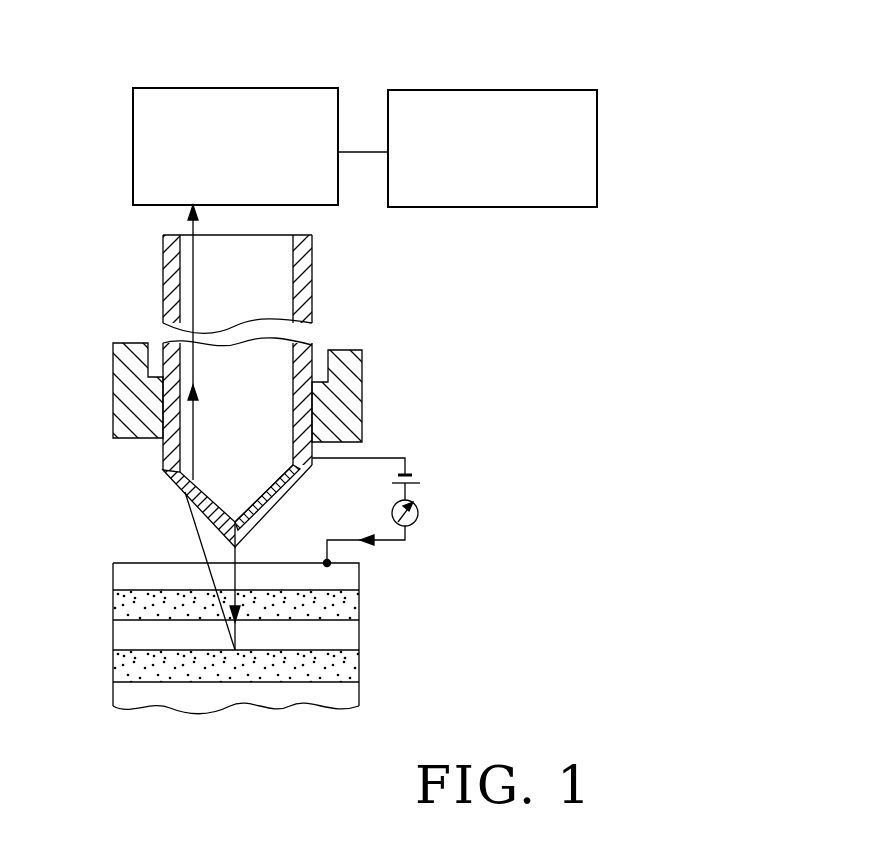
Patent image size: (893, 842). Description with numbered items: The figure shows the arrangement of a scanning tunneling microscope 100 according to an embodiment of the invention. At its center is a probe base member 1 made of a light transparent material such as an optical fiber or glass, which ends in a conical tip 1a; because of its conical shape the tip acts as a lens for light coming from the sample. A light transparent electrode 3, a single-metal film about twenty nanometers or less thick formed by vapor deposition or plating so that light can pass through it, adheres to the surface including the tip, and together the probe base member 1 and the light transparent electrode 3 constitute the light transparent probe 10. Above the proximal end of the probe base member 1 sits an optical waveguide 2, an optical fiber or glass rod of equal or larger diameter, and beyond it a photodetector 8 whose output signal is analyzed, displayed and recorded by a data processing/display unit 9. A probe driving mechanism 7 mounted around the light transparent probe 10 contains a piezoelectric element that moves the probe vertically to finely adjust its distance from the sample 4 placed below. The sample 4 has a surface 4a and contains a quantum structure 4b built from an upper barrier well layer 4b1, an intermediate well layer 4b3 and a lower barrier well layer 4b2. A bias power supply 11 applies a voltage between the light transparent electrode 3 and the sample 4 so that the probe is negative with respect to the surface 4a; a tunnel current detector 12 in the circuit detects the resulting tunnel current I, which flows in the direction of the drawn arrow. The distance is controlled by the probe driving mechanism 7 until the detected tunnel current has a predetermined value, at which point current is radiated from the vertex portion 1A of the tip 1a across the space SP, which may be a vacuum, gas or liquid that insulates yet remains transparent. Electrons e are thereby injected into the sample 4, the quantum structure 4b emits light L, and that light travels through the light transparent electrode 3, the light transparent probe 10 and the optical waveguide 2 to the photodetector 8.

The scanning tunneling microscope 100 is at (88, 116).
The photodetector 8 is at (300, 88).
The data processing/display unit 9 is at (548, 90).
The light L is at (193, 270).
The optical waveguide 2 is at (267, 283).
The light transparent probe 10 is at (384, 334).
The probe driving mechanism 7 is at (128, 385).
The probe base member 1 is at (168, 422).
The light transparent electrode 3 is at (168, 455).
The vertex portion 1A is at (240, 520).
The conical tip 1a is at (250, 465).
The bias power supply 11 is at (420, 478).
The tunnel current detector 12 is at (418, 515).
The current I is at (365, 554).
The space SP is at (238, 553).
The sample 4 is at (83, 630).
The surface of the sample 4a is at (140, 563).
The electrons e is at (240, 598).
The quantum structure 4b is at (476, 601).
The upper barrier well layer 4b1 is at (305, 627).
The intermediate well layer 4b3 is at (328, 642).
The lower barrier well layer 4b2 is at (333, 690).